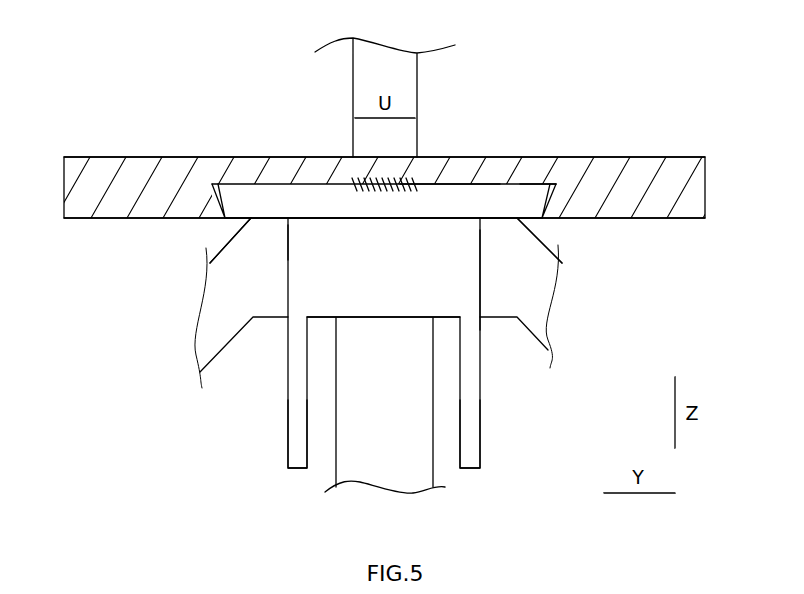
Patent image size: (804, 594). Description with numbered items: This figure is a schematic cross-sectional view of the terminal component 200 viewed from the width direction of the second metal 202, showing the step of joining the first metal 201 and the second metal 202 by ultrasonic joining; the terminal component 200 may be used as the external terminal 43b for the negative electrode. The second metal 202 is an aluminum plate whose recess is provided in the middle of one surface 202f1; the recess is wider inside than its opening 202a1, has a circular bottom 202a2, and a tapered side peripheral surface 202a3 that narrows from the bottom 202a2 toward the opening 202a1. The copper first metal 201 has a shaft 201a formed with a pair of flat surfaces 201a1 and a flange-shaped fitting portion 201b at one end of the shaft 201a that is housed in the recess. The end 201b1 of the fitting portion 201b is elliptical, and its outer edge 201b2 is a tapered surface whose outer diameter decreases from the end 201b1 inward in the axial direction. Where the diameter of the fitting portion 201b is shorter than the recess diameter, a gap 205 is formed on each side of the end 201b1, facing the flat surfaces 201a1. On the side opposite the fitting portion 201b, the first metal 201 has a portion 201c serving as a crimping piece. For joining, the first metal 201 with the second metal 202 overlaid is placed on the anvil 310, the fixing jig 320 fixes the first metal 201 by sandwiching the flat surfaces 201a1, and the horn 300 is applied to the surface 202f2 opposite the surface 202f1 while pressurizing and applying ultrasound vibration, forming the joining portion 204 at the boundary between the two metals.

The external terminal 43b is at (179, 77).
The horn 300 is at (383, 62).
The terminal component 200 is at (623, 80).
The second metal 202 is at (629, 140).
The surface 202f2 is at (672, 157).
The surface 202f1 is at (653, 218).
The bottom 202a2 is at (318, 185).
The side peripheral surface 202a3 is at (216, 198).
The opening 202a1 is at (288, 240).
The end 201b1 is at (447, 184).
The outer edge 201b2 is at (556, 184).
The fitting portion 201b is at (233, 224).
The joining portion 204 is at (353, 176).
The gap 205 is at (557, 207).
The first metal 201 is at (264, 353).
The shaft 201a is at (483, 287).
The flat surfaces 201a1 is at (288, 290).
The portion 201c is at (482, 414).
The fixing jig 320 is at (200, 352).
The anvil 310 is at (380, 467).